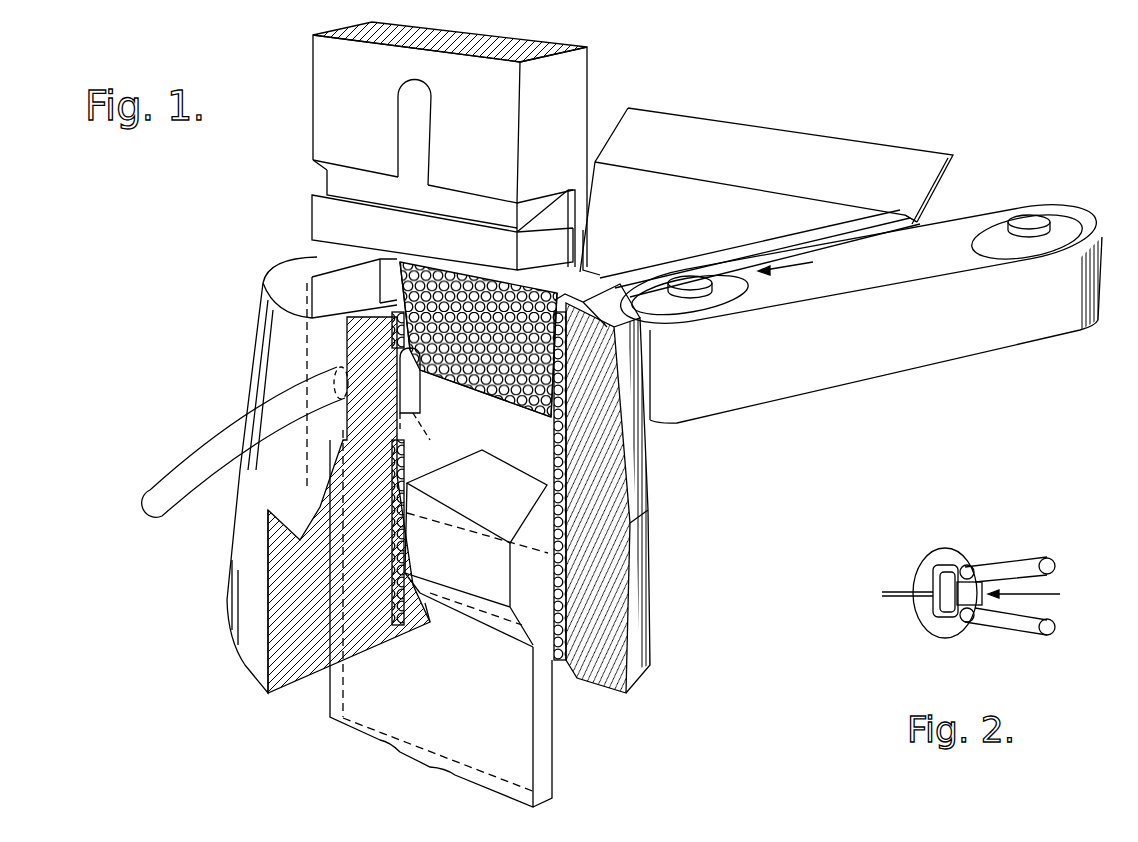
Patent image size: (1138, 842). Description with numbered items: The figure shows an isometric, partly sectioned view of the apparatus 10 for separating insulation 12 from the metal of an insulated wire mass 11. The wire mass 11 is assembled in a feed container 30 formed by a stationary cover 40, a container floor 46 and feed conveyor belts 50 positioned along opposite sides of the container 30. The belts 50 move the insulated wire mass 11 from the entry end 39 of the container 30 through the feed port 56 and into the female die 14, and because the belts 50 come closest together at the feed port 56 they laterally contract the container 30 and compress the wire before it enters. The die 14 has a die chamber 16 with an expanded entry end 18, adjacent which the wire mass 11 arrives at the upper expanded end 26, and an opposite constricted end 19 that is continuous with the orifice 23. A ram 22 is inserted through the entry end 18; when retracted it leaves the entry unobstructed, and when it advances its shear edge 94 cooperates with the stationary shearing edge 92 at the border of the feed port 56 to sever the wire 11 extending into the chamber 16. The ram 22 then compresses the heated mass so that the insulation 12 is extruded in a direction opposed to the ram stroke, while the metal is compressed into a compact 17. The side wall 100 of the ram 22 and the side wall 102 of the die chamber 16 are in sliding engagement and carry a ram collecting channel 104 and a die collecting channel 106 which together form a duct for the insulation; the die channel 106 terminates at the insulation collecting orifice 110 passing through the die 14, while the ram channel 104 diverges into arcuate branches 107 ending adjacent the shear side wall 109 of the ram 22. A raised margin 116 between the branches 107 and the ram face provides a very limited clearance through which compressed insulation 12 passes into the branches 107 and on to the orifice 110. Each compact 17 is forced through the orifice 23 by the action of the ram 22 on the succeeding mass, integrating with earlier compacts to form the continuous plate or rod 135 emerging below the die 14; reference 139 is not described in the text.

In FIG. 1, the apparatus 10 is at (253, 267).
In FIG. 1, the insulated wire mass 11 is at (398, 305).
In FIG. 1, the insulation 12 is at (185, 457).
In FIG. 1, the female die 14 is at (648, 610).
In FIG. 2, the female die 14 is at (938, 615).
In FIG. 1, the die chamber 16 is at (536, 468).
In FIG. 1, the metal compact 17 is at (495, 581).
In FIG. 1, the entry end 18 is at (272, 302).
In FIG. 1, the constricted end 19 is at (427, 597).
In FIG. 1, the ram 22 is at (310, 217).
In FIG. 2, the ram 22 is at (945, 575).
In FIG. 1, the orifice 23 is at (433, 627).
In FIG. 1, the expanded end of die chamber 26 is at (446, 390).
In FIG. 1, the feed container 30 is at (816, 242).
In FIG. 1, the entry end of container 39 is at (928, 215).
In FIG. 1, the stationary cover 40 is at (693, 188).
In FIG. 1, the container floor 46 is at (522, 397).
In FIG. 1, the feed conveyor belts 50 is at (1055, 310).
In FIG. 2, the feed conveyor belts 50 is at (1013, 555).
In FIG. 1, the feed port 56 is at (497, 402).
In FIG. 1, the stationary shearing edge 92 is at (469, 395).
In FIG. 1, the ram shear edge 94 is at (584, 258).
In FIG. 1, the ram side wall 100 is at (322, 63).
In FIG. 1, the die chamber side wall 102 is at (337, 277).
In FIG. 1, the ram collecting channel 104 is at (420, 126).
In FIG. 1, the die collecting channel 106 is at (411, 418).
In FIG. 1, the arcuate branches 107 is at (330, 178).
In FIG. 1, the shear side wall 109 is at (578, 220).
In FIG. 1, the insulation collecting orifice 110 is at (340, 366).
In FIG. 1, the raised margin 116 is at (318, 208).
In FIG. 1, the continuous plate or rod 135 is at (530, 743).
In FIG. 1, the edge 139 is at (413, 587).